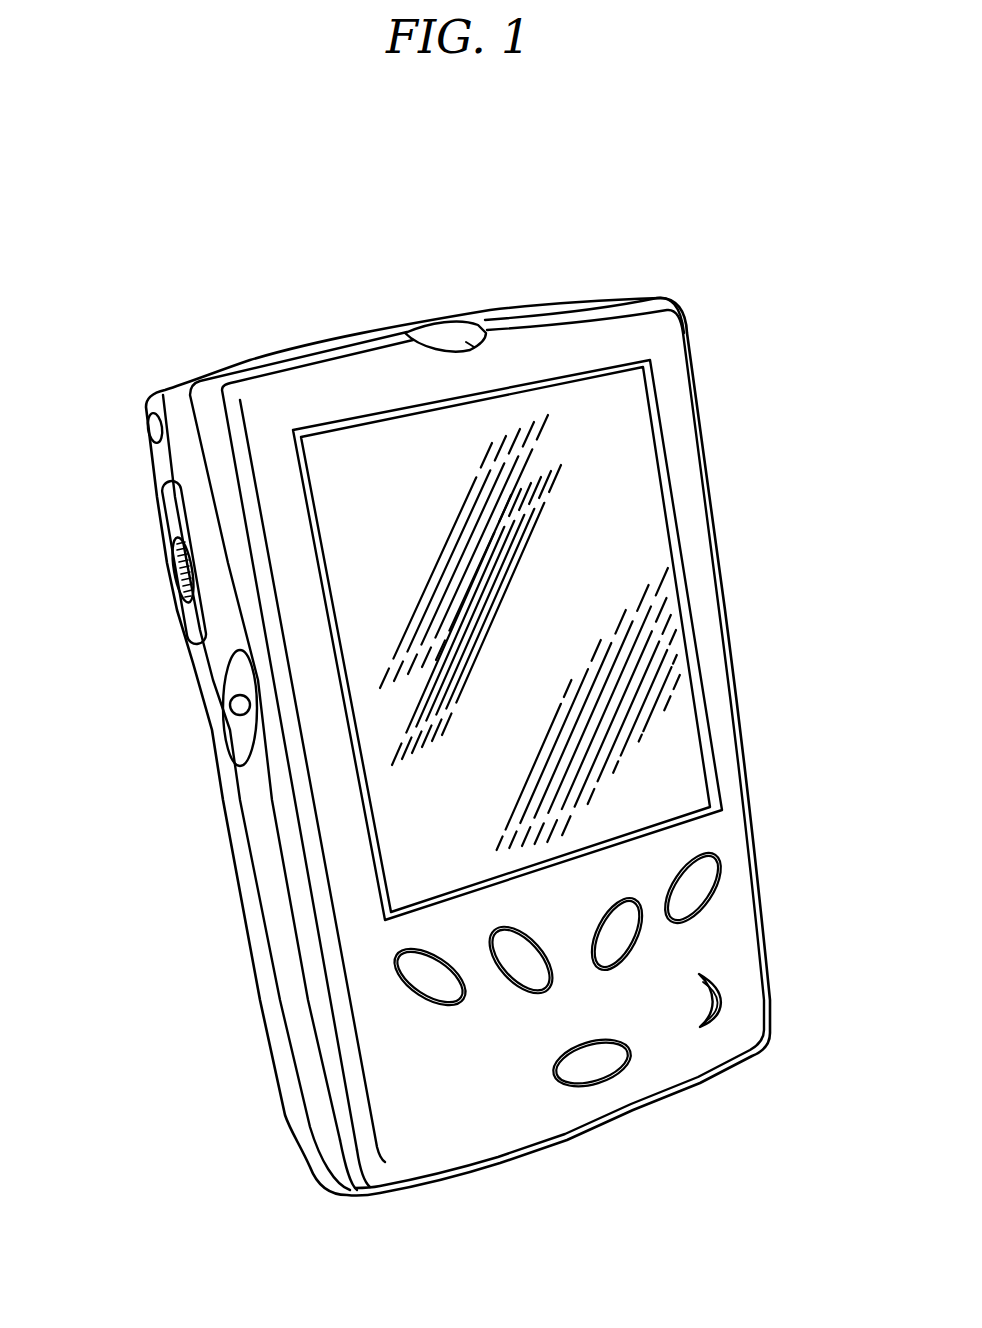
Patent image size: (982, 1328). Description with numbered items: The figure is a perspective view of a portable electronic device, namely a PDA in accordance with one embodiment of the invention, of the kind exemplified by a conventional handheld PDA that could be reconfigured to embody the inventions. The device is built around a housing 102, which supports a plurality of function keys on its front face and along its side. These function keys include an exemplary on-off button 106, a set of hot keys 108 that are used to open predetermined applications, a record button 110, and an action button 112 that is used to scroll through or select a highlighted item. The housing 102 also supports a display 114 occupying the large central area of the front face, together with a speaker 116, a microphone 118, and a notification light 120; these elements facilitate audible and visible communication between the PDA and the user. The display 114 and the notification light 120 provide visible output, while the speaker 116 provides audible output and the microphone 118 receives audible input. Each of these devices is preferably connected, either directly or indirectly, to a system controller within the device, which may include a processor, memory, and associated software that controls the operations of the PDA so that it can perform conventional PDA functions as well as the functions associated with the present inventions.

The housing 102 is at (385, 1145).
The on-off button 106 is at (598, 1065).
The hot keys 108 is at (418, 968).
The record button 110 is at (242, 705).
The action button 112 is at (178, 568).
The display 114 is at (660, 708).
The speaker 116 is at (718, 990).
The microphone 118 is at (157, 428).
The notification light 120 is at (487, 343).